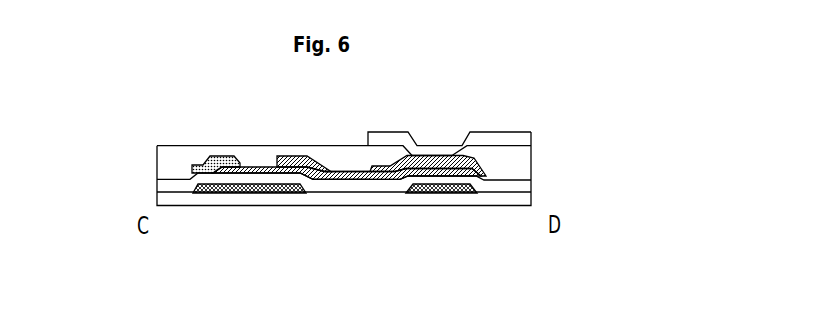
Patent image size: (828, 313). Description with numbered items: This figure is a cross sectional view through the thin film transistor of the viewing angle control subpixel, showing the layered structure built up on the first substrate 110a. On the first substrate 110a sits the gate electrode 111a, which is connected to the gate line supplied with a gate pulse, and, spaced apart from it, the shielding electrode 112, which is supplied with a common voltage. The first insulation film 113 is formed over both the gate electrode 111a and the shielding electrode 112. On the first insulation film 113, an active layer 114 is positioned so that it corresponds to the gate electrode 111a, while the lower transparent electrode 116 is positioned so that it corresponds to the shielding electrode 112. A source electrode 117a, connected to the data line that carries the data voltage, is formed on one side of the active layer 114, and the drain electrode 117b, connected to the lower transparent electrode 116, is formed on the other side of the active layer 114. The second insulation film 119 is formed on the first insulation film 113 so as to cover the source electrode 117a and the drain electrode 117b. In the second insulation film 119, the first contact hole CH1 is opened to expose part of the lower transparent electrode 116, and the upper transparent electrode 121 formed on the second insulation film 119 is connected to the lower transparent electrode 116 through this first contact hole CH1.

The first substrate 110a is at (170, 200).
The gate electrode 111a is at (217, 194).
The shielding electrode 112 is at (463, 194).
The first insulation film 113 is at (317, 184).
The active layer 114 is at (279, 172).
The lower transparent electrode 116 is at (495, 180).
The source electrode 117a is at (190, 172).
The drain electrode 117b is at (403, 181).
The second insulation film 119 is at (362, 170).
The upper transparent electrode 121 is at (525, 140).
The first contact hole CH1 is at (408, 146).